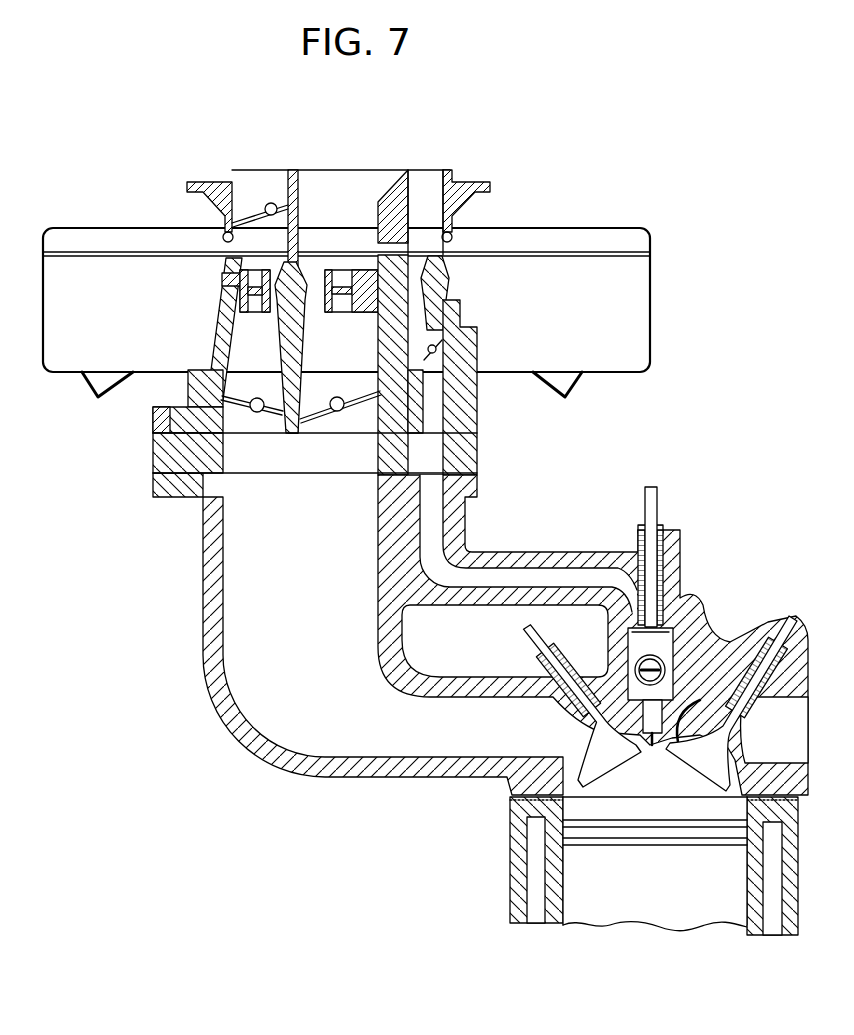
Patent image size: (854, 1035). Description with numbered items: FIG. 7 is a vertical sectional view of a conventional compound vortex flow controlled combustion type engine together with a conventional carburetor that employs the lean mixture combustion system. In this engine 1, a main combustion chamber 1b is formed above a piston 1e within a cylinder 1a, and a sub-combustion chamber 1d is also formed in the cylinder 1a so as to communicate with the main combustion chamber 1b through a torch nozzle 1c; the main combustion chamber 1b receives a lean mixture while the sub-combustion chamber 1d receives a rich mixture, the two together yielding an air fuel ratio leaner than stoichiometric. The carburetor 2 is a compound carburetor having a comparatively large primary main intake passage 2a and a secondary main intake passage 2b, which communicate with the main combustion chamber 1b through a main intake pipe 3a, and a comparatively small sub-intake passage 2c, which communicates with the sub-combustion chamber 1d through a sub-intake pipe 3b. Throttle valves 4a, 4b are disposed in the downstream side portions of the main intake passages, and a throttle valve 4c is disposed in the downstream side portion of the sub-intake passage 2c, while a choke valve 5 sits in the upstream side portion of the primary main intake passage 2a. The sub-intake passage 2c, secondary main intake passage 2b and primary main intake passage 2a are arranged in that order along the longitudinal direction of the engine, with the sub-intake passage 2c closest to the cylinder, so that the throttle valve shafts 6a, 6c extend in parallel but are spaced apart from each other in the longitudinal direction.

The engine 1 is at (617, 891).
The cylinder 1a is at (772, 920).
The main combustion chamber 1b is at (610, 792).
The torch nozzle 1c is at (645, 712).
The sub-combustion chamber 1d is at (668, 640).
The piston 1e is at (653, 890).
The carburetor 2 is at (150, 378).
The primary main intake passage 2a is at (232, 340).
The secondary main intake passage 2b is at (355, 325).
The sub-intake passage 2c is at (435, 312).
The main intake pipe 3a is at (265, 710).
The sub-intake pipe 3b is at (578, 578).
The throttle valve 4a is at (252, 410).
The throttle valve 4b is at (320, 428).
The throttle valve 4c is at (438, 358).
The choke valve 5 is at (268, 207).
The throttle valve shaft 6a is at (200, 490).
The throttle valve shaft 6c is at (437, 349).